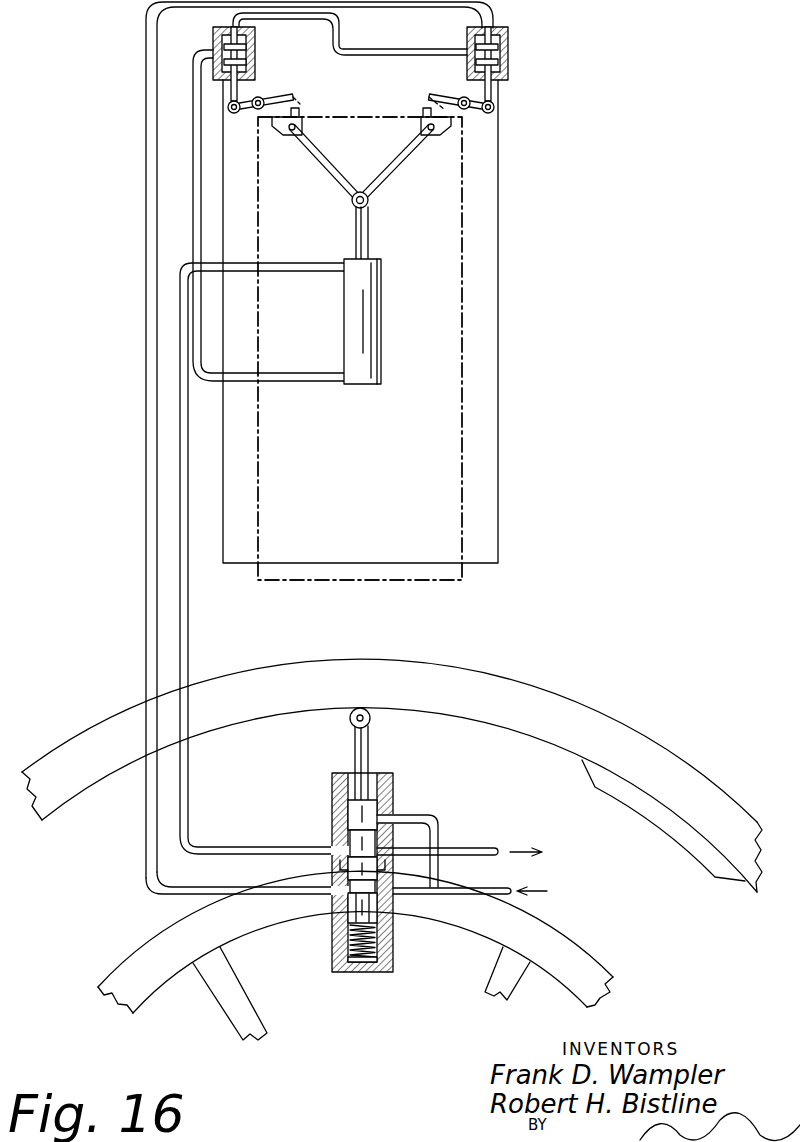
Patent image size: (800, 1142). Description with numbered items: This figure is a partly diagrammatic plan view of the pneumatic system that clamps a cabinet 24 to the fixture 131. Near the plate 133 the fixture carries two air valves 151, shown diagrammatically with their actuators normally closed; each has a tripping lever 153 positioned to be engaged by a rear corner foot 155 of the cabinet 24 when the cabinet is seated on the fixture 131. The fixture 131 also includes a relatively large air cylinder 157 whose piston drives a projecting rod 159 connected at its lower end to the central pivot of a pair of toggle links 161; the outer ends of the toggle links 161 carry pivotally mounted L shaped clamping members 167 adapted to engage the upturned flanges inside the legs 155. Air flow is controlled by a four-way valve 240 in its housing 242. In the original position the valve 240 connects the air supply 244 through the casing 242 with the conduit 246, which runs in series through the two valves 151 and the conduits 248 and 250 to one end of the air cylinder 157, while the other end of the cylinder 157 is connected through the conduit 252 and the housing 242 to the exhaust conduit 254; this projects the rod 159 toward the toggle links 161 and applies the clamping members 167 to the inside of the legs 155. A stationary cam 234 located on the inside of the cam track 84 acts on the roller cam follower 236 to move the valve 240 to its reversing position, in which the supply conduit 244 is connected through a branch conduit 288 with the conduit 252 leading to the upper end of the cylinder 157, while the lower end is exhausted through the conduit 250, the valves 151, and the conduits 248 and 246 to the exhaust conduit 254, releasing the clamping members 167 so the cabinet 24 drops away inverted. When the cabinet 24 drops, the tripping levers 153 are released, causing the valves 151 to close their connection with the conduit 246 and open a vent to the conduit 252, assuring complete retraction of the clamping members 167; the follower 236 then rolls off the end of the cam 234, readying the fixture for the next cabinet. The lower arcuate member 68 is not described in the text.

The cabinet 24 is at (440, 581).
The rim 68 is at (128, 961).
The cam track 84 is at (58, 752).
The fixture 131 is at (498, 277).
The plate 133 is at (487, 363).
The air valves 151 is at (215, 33).
The tripping levers 153 is at (286, 96).
The rear corner feet 155 is at (288, 104).
The air cylinder 157 is at (352, 322).
The projecting rod 159 is at (356, 224).
The toggle links 161 is at (380, 181).
The L shaped clamping members 167 is at (288, 136).
The stationary cam 234 is at (676, 841).
The roller cam follower 236 is at (351, 722).
The four-way valve 240 is at (350, 808).
The valve housing 242 is at (385, 946).
The air supply 244 is at (487, 888).
The conduit 246 is at (147, 846).
The conduit 248 is at (378, 50).
The conduit 250 is at (291, 382).
The conduit 252 is at (188, 611).
The exhaust conduit 254 is at (489, 848).
The branch conduit 288 is at (431, 817).